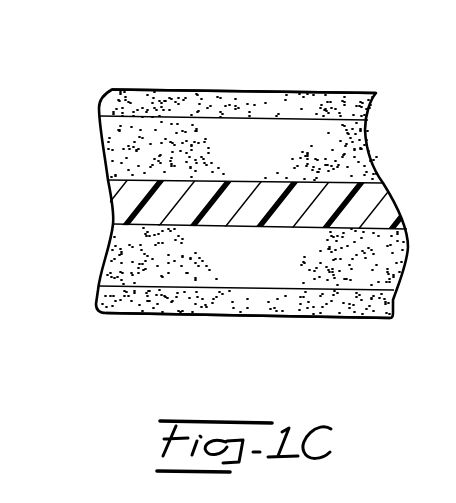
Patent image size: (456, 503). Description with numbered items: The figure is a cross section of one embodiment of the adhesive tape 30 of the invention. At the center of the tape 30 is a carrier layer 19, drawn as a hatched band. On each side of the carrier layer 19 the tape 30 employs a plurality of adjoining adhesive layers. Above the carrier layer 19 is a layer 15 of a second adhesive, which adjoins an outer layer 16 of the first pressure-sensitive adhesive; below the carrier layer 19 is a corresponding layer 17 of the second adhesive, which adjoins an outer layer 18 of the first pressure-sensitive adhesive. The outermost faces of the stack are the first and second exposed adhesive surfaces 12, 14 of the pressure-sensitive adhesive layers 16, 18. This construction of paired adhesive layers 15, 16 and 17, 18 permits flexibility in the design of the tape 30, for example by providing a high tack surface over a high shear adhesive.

The first exposed adhesive surface 12 is at (220, 92).
The second exposed adhesive surface 14 is at (180, 315).
The layer of second adhesive 15 is at (110, 132).
The first layer of first pressure-sensitive adhesive 16 is at (343, 97).
The layer of second adhesive 17 is at (115, 253).
The second layer of first pressure-sensitive adhesive 18 is at (358, 303).
The carrier layer 19 is at (394, 200).
The tape 30 is at (88, 189).